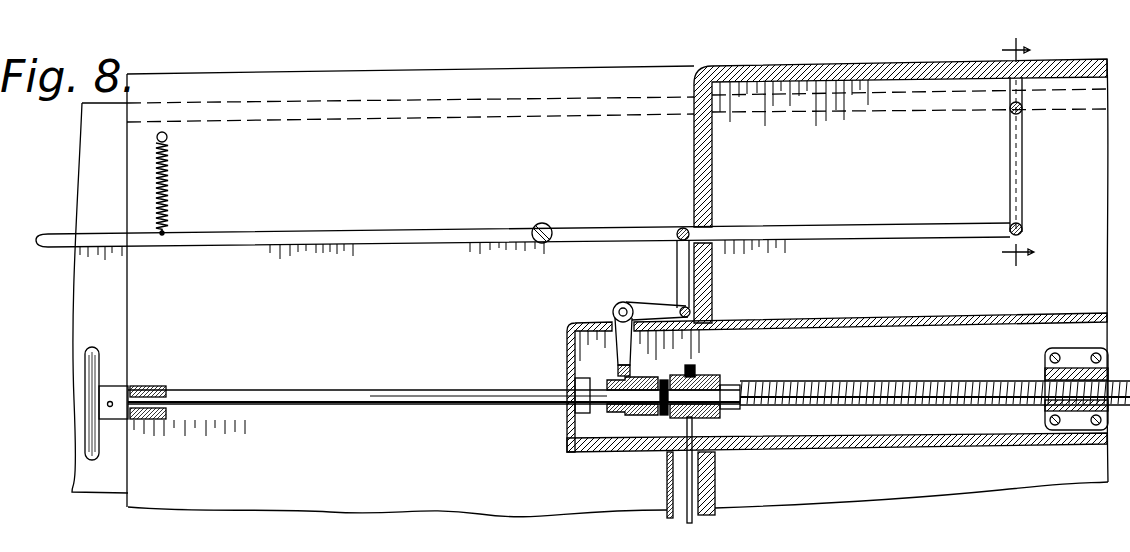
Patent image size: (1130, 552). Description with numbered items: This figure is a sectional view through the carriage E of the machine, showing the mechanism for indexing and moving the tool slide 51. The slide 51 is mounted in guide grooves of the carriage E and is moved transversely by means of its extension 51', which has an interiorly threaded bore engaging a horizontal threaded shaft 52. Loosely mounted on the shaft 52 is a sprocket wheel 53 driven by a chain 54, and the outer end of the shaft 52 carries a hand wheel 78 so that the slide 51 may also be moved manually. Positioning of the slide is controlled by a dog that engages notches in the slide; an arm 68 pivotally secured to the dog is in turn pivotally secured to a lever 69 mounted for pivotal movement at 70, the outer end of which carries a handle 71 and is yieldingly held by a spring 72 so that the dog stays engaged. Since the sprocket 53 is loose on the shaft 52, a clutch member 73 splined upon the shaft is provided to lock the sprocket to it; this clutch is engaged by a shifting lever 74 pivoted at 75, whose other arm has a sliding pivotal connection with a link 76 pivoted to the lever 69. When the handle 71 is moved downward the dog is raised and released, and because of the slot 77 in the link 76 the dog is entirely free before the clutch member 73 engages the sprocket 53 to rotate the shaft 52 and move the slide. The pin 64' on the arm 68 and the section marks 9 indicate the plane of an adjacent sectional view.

The carriage E is at (540, 66).
The slide 51 is at (82, 298).
The extension 51' is at (1050, 383).
The threaded shaft 52 is at (898, 380).
The sprocket wheel 53 is at (700, 383).
The chain 54 is at (687, 524).
The pin 64' is at (1045, 111).
The arm 68 is at (1022, 180).
The lever 69 is at (450, 229).
The pivot 70 is at (549, 227).
The handle 71 is at (40, 250).
The spring 72 is at (170, 183).
The clutch member 73 is at (640, 416).
The shifting lever 74 is at (612, 338).
The pivot 75 is at (614, 311).
The link 76 is at (677, 272).
The slot 77 is at (690, 318).
The hand wheel 78 is at (88, 376).
The section line 9- 9 is at (1011, 154).